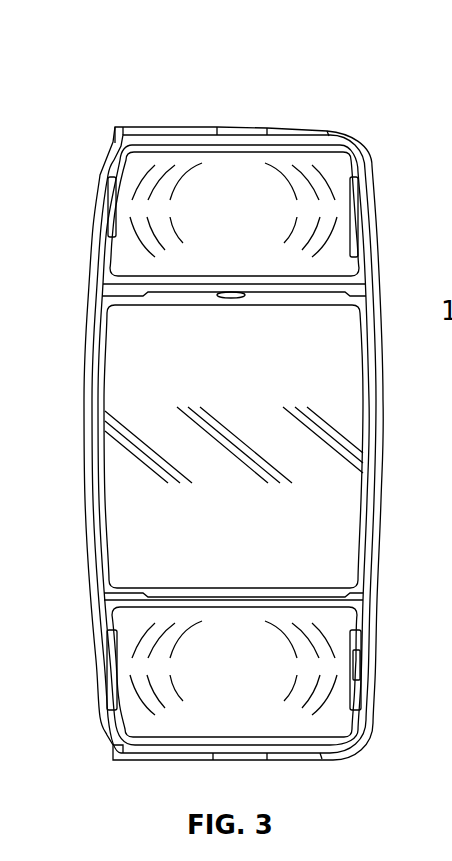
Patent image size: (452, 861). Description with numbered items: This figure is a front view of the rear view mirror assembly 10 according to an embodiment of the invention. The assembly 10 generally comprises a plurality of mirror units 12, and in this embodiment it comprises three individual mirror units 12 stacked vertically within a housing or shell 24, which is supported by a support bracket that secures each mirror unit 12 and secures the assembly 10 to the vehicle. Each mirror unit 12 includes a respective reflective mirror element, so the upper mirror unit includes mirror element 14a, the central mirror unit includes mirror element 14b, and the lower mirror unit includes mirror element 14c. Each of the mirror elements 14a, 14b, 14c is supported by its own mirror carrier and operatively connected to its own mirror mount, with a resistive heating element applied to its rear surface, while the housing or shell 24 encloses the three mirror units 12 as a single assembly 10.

The rear view mirror assembly 10 is at (100, 93).
The mirror unit 12 is at (236, 146).
The housing or shell 24 is at (333, 132).
The mirror element 14a is at (130, 252).
The mirror element 14b is at (130, 382).
The mirror element 14c is at (130, 713).